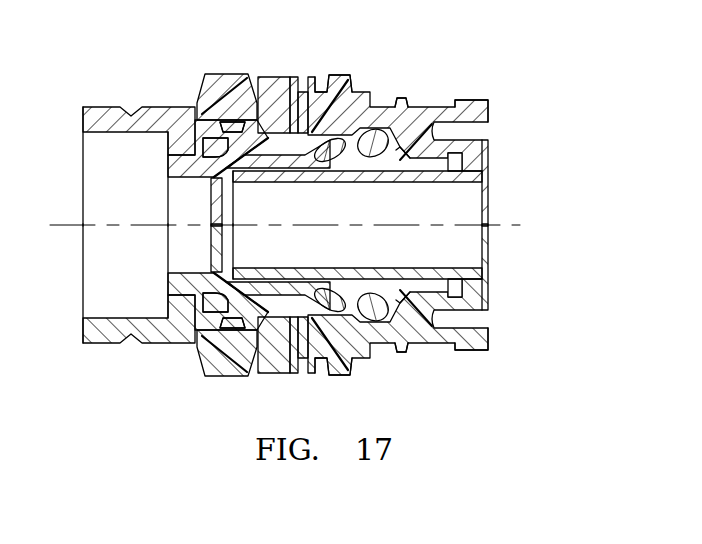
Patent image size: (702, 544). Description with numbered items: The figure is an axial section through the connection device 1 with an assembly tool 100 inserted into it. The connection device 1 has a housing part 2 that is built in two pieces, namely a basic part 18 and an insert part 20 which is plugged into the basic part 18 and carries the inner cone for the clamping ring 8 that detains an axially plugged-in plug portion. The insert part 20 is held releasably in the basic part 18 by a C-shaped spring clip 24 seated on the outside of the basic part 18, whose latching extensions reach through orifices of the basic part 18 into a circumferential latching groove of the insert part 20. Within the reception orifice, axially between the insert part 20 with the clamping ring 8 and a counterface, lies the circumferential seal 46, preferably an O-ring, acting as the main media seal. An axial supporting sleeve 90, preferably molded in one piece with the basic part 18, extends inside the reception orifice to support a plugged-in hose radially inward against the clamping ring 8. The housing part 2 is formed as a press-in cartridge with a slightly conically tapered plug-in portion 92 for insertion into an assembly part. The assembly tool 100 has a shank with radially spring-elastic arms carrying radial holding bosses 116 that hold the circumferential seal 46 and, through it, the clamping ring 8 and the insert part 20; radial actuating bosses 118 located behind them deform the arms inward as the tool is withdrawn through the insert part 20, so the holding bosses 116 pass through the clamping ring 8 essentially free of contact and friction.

The connection device 1 is at (428, 223).
The housing part 2 is at (362, 362).
The clamping ring 8 is at (331, 108).
The basic part 18 is at (238, 362).
The insert part 20 is at (197, 118).
The C-shaped spring clip 24 is at (280, 73).
The circumferential seal 46 is at (380, 106).
The supporting sleeve 90 is at (312, 160).
The plug-in portion 92 is at (480, 100).
The assembly tool 100 is at (150, 90).
The radial holding bosses 116 is at (400, 152).
The radial actuating bosses 118 is at (372, 158).